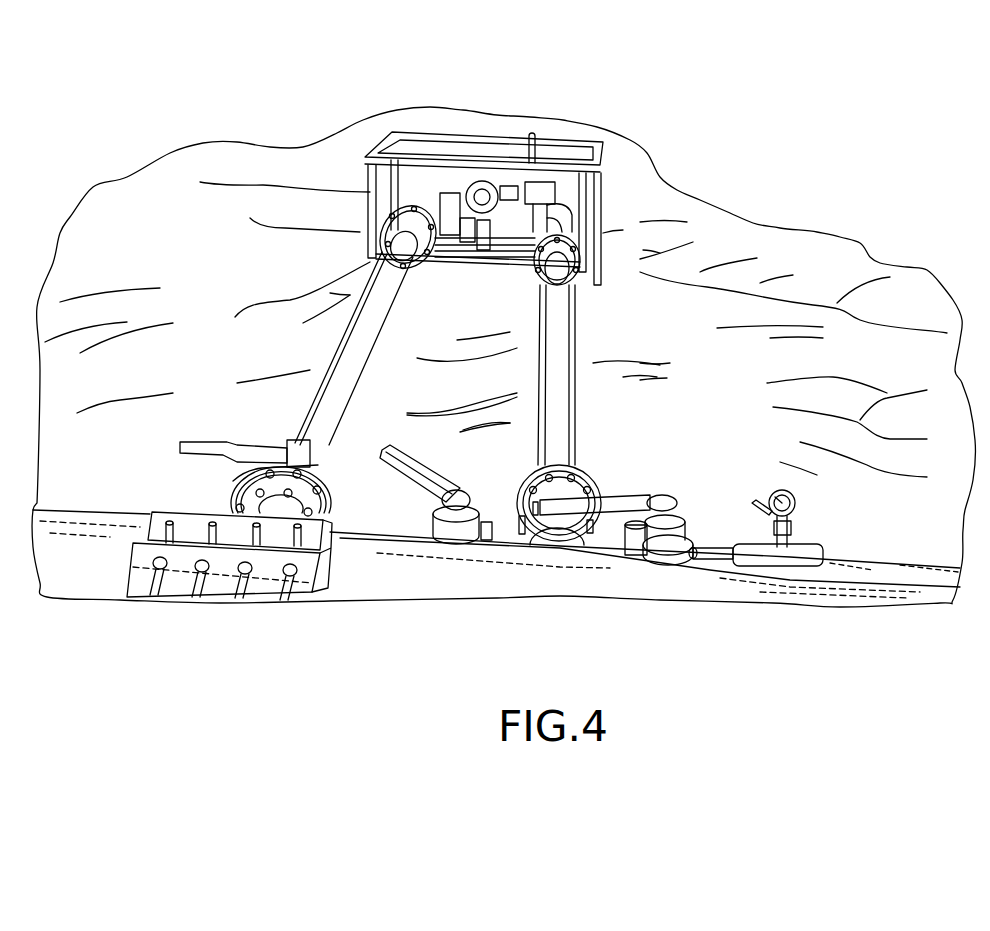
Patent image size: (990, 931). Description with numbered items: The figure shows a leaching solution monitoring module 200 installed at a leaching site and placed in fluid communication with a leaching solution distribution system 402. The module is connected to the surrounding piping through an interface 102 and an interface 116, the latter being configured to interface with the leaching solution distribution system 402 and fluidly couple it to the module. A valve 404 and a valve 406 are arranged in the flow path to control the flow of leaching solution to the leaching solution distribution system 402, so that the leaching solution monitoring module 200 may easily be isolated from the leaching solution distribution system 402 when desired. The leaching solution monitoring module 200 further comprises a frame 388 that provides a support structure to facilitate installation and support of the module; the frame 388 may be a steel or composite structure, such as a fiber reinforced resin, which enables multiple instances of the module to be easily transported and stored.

The leaching solution monitoring module 200 is at (383, 88).
The frame 388 is at (597, 147).
The interface 102 is at (270, 465).
The valve 406 is at (322, 466).
The interface 116 is at (581, 479).
The valve 404 is at (670, 501).
The leaching solution distribution system 402 is at (577, 587).